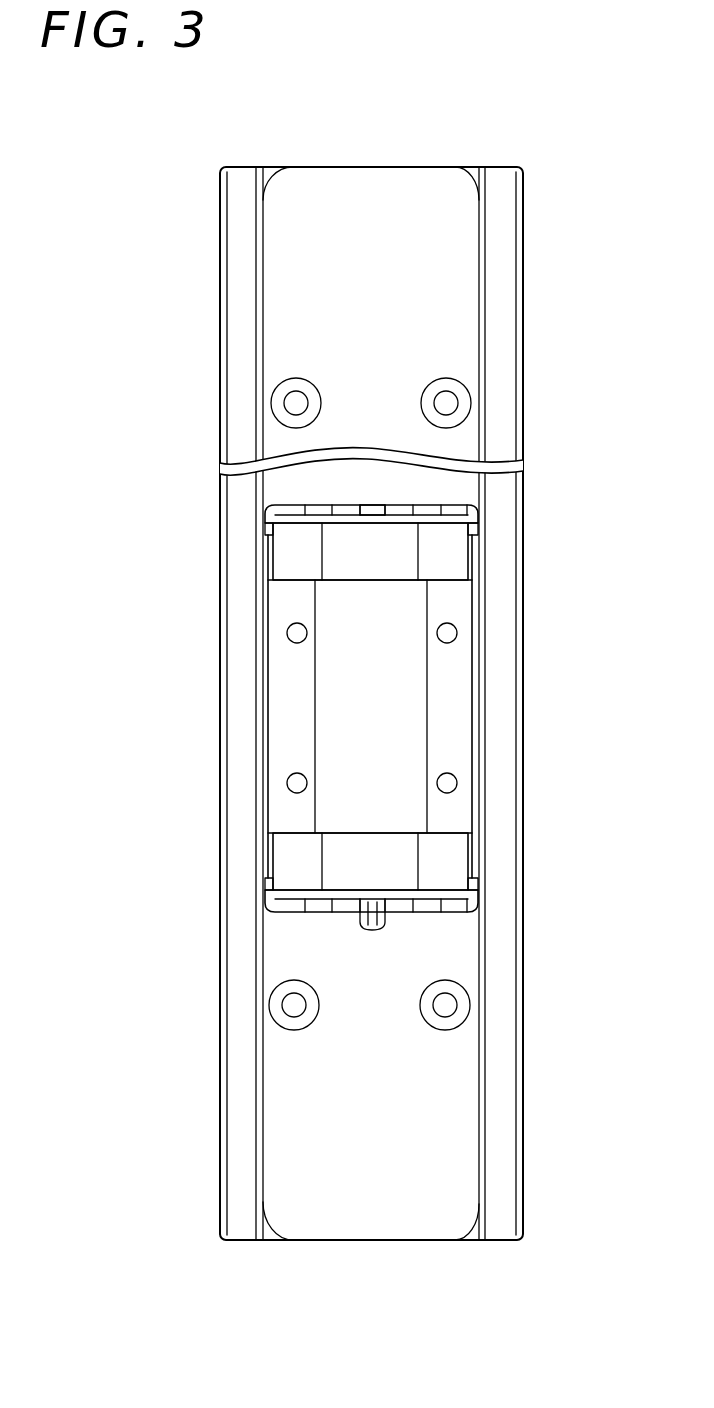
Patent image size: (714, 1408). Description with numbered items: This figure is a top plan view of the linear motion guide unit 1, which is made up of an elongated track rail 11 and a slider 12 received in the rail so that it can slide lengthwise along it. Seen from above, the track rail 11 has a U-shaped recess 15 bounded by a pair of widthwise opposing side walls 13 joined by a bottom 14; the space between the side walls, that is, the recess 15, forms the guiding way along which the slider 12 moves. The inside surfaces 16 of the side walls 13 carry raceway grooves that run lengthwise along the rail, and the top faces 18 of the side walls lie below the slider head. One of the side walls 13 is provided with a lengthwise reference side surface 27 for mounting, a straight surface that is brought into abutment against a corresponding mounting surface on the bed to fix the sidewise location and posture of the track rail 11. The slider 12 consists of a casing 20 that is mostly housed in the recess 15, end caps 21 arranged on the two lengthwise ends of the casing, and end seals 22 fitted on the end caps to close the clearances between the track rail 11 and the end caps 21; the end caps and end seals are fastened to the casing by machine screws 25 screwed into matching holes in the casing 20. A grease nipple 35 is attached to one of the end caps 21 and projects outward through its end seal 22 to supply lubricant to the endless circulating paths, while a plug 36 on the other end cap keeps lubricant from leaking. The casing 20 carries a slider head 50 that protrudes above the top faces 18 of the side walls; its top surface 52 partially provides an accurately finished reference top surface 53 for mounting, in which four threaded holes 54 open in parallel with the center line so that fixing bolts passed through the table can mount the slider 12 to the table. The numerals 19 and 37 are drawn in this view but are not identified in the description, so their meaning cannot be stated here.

The linear motion guide unit 1 is at (535, 548).
The track rail 11 is at (527, 245).
The slider 12 is at (371, 725).
The side walls 13 is at (243, 218).
The bottom 14 is at (364, 213).
The recess 15 is at (359, 298).
The inside surfaces 16 is at (293, 166).
The top faces 18 is at (247, 277).
The mounting hole 19 is at (290, 403).
The casing 20 is at (384, 706).
The end caps 21 is at (450, 570).
The end seals 22 is at (376, 725).
The machine screws 25 is at (317, 508).
The reference side surface 27 is at (172, 1203).
The grease nipple 35 is at (377, 922).
The plug 36 is at (369, 509).
The side seal 37 is at (260, 753).
The slider head 50 is at (393, 706).
The top surface 52 is at (415, 702).
The reference top surface 53 is at (283, 713).
The threaded holes 54 is at (287, 631).